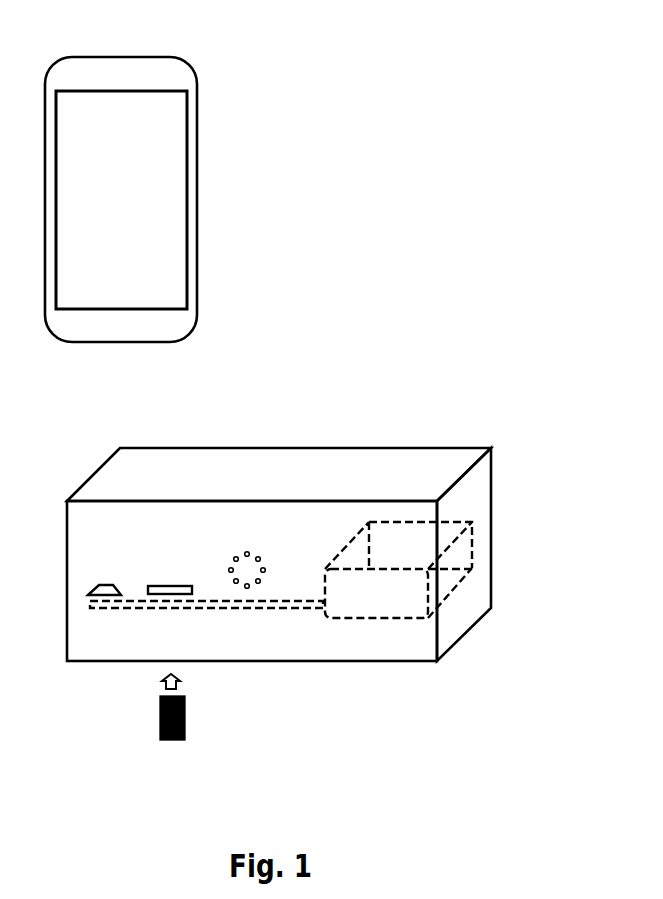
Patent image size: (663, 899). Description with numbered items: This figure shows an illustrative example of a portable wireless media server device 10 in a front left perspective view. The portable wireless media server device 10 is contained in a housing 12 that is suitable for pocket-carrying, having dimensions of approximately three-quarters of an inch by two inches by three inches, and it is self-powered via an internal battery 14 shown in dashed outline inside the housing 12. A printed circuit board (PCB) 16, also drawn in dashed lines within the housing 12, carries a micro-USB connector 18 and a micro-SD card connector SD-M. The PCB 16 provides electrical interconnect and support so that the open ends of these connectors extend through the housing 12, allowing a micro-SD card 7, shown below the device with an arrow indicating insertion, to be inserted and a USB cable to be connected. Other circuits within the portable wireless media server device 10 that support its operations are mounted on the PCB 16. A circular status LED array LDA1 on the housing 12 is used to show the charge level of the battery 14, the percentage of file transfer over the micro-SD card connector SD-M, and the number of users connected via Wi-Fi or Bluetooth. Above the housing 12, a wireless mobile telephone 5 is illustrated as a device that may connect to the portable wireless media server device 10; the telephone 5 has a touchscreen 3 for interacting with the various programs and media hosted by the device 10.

The touchscreen 3 is at (84, 125).
The wireless mobile telephone 5 is at (204, 128).
The micro-SD card 7 is at (187, 725).
The portable wireless media server device 10 is at (411, 301).
The housing 12 is at (467, 448).
The internal battery 14 is at (455, 568).
The printed circuit board 16 is at (98, 612).
The micro-USB connector 18 is at (100, 587).
The micro-SD card connector SD-M is at (187, 585).
The circular status LED array LDA1 is at (247, 553).